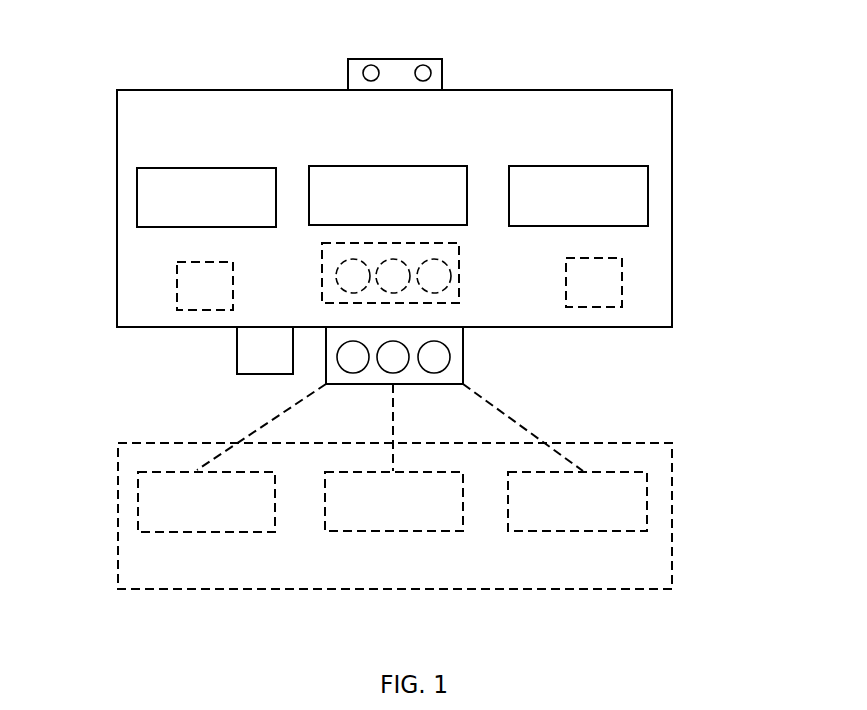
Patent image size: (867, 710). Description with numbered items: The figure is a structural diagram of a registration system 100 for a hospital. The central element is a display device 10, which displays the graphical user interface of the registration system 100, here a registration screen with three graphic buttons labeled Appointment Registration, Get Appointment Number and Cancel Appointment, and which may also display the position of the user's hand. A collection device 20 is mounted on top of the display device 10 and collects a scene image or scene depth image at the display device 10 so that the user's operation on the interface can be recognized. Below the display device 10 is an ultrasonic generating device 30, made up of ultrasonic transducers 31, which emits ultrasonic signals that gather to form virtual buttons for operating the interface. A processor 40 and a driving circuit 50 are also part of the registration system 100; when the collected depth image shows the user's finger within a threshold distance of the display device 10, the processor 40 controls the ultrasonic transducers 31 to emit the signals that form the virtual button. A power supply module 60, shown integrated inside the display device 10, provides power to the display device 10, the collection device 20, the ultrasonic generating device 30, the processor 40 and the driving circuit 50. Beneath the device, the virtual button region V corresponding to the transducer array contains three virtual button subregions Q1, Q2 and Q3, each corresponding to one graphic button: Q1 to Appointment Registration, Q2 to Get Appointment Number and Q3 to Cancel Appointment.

The registration system 100 is at (70, 22).
The display device 10 is at (672, 195).
The collection device 20 is at (442, 70).
The ultrasonic generating device 30 is at (447, 342).
The ultrasonic transducer 31 is at (353, 373).
The processor 40 is at (177, 285).
The driving circuit 50 is at (237, 352).
The power supply module 60 is at (622, 283).
The virtual button region V is at (447, 539).
The virtual button subregion Q1 is at (219, 532).
The virtual button subregion Q2 is at (442, 531).
The virtual button subregion Q3 is at (596, 531).